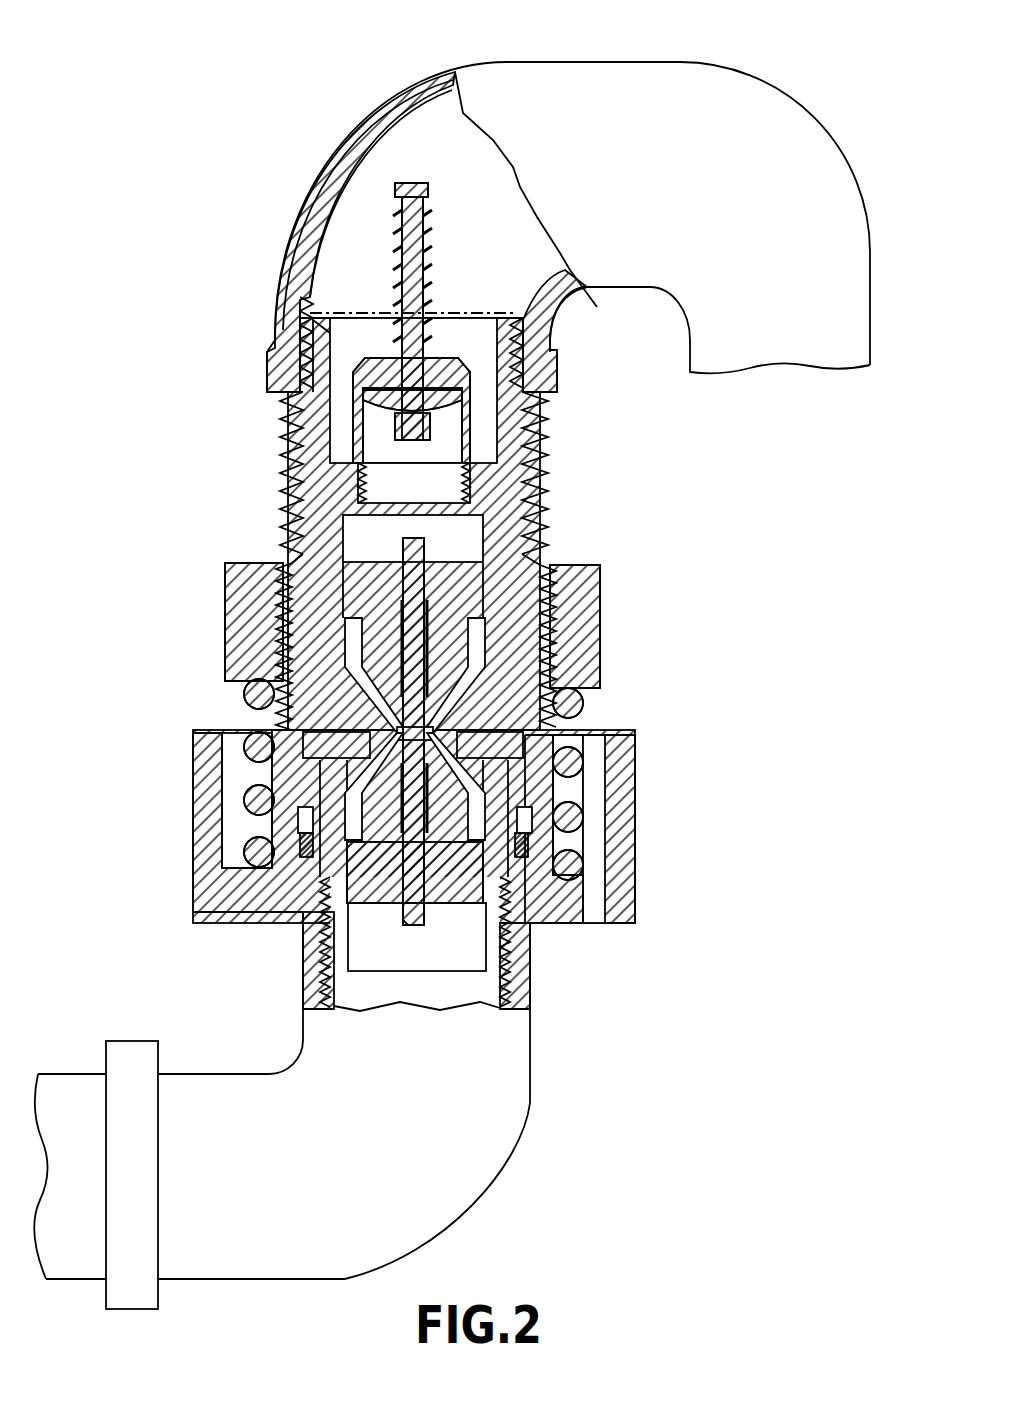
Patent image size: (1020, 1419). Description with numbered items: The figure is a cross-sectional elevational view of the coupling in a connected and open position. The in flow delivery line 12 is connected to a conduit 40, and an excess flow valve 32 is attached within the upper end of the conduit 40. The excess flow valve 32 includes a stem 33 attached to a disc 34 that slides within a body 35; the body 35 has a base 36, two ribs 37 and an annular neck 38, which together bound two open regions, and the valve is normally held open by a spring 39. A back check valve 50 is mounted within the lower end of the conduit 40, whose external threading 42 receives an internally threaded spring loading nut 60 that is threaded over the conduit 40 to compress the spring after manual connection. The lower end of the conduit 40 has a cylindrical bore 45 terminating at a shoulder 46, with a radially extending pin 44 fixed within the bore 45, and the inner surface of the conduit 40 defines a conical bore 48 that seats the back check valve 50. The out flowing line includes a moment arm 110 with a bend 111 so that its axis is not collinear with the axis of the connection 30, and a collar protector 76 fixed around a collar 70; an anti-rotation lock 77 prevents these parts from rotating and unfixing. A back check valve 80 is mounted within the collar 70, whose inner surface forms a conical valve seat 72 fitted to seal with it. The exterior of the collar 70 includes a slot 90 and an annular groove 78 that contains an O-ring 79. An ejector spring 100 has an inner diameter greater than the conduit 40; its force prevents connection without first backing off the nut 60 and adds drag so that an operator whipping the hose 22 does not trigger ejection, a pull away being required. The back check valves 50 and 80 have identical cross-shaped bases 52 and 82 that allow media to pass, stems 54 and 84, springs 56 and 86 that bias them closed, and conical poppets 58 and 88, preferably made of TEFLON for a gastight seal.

The in flow delivery line 12 is at (617, 93).
The hose 22 is at (77, 1094).
The connection 30 is at (186, 666).
The excess flow valve 32 is at (490, 306).
The stem 33 is at (425, 210).
The disc 34 is at (388, 413).
The body 35 is at (344, 423).
The base 36 is at (455, 373).
The ribs 37 is at (463, 451).
The annular neck 38 is at (390, 496).
The spring 39 is at (400, 293).
The conduit 40 is at (523, 446).
The external threading 42 is at (550, 481).
The radially extending pin 44 is at (297, 801).
The cylindrical bore 45 is at (603, 735).
The shoulder 46 is at (520, 712).
The conical bore 48 is at (480, 688).
The back check valve 50 is at (460, 627).
The base 52 is at (370, 568).
The stem 54 is at (425, 547).
The spring 56 is at (400, 640).
The conical poppet 58 is at (377, 625).
The spring loading nut 60 is at (585, 577).
The collar 70 is at (497, 860).
The valve seat 72 is at (480, 782).
The collar protector 76 is at (623, 882).
The anti-rotation lock 77 is at (314, 957).
The annular groove 78 is at (303, 863).
The O-ring 79 is at (303, 852).
The back check valve 80 is at (480, 810).
The base 82 is at (373, 883).
The stem 84 is at (428, 917).
The spring 86 is at (427, 833).
The conical poppet 88 is at (343, 759).
The slot 90 is at (303, 826).
The ejector spring 100 is at (244, 692).
The moment arm 110 is at (208, 1198).
The bend 111 is at (474, 1188).